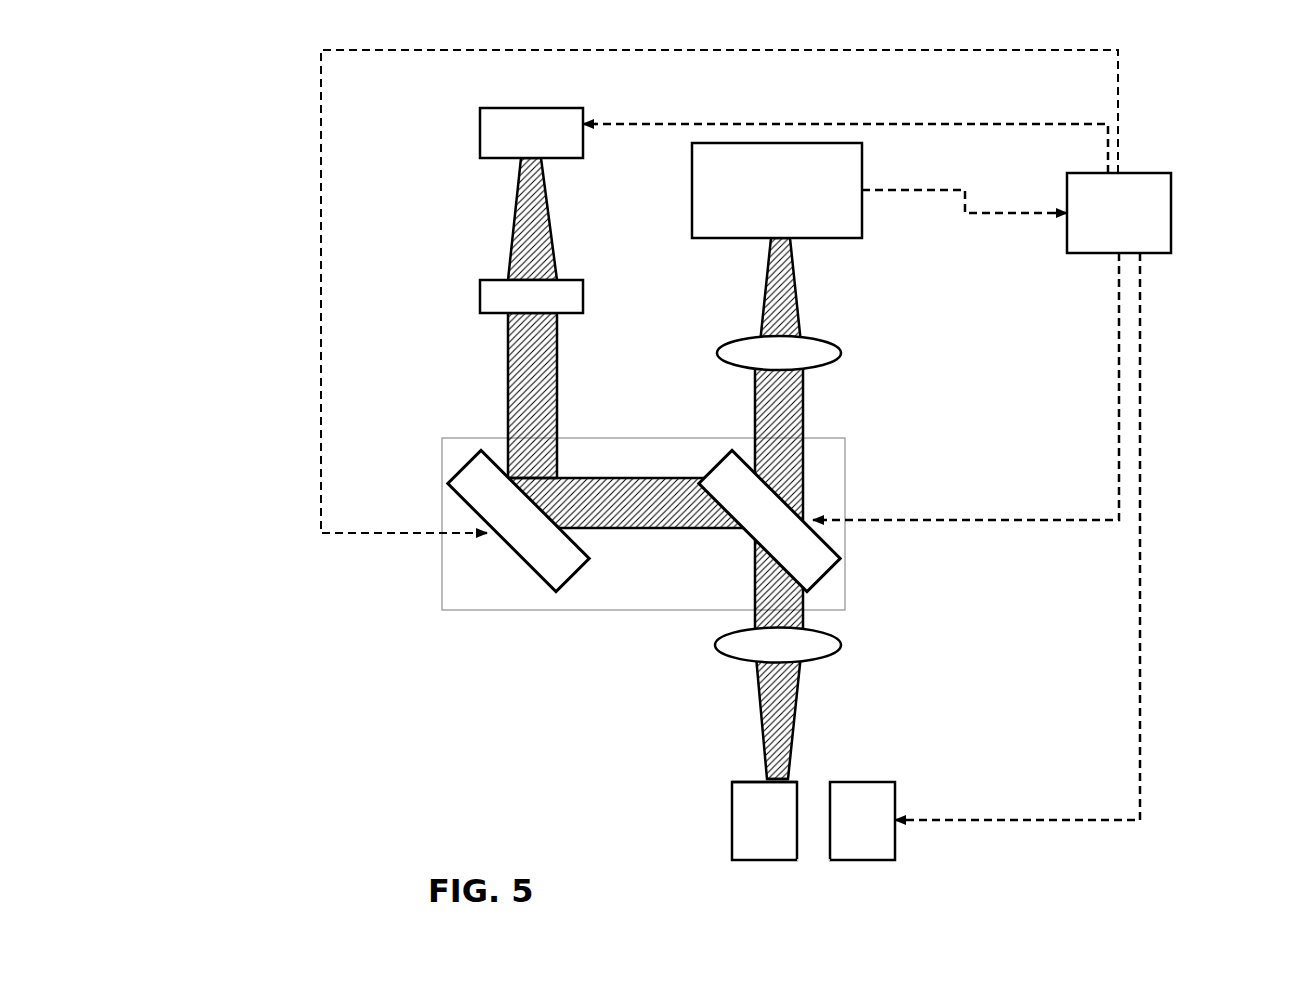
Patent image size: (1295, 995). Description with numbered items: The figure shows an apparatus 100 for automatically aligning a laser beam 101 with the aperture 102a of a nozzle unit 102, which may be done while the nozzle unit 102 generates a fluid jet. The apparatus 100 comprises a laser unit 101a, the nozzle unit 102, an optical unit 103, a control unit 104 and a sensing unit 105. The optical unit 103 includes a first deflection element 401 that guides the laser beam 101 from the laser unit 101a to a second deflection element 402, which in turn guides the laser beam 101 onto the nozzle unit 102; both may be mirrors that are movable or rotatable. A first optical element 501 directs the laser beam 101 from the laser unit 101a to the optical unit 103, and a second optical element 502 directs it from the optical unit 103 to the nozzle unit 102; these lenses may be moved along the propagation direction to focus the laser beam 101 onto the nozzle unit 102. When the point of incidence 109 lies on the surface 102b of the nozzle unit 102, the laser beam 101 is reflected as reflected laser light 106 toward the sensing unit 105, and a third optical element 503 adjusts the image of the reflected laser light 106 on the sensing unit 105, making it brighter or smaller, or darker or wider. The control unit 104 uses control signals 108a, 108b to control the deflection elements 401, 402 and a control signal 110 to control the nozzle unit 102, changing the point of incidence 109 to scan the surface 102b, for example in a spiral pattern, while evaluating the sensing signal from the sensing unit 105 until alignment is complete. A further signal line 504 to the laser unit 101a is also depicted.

The apparatus 100 is at (495, 630).
The laser beam 101 is at (508, 250).
The laser unit 101a is at (480, 133).
The nozzle unit 102 is at (732, 808).
The aperture 102a is at (813, 856).
The surface 102b is at (745, 778).
The optical unit 103 is at (440, 562).
The control unit 104 is at (1171, 213).
The sensing unit 105 is at (862, 169).
The reflected laser light 106 is at (803, 390).
The control signal 108a is at (1118, 394).
The control signal 108b is at (321, 330).
The point of incidence 109 is at (790, 778).
The control signal 110 is at (1140, 670).
The first deflection element 401 is at (467, 465).
The second deflection element 402 is at (718, 458).
The first optical element 501 is at (480, 297).
The second optical element 502 is at (840, 647).
The third optical element 503 is at (843, 357).
The control signal line to first light source 504 is at (683, 124).